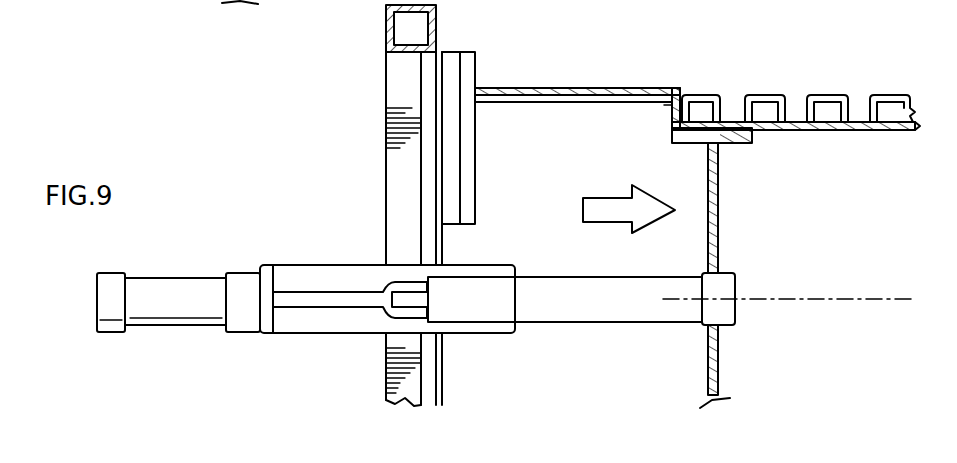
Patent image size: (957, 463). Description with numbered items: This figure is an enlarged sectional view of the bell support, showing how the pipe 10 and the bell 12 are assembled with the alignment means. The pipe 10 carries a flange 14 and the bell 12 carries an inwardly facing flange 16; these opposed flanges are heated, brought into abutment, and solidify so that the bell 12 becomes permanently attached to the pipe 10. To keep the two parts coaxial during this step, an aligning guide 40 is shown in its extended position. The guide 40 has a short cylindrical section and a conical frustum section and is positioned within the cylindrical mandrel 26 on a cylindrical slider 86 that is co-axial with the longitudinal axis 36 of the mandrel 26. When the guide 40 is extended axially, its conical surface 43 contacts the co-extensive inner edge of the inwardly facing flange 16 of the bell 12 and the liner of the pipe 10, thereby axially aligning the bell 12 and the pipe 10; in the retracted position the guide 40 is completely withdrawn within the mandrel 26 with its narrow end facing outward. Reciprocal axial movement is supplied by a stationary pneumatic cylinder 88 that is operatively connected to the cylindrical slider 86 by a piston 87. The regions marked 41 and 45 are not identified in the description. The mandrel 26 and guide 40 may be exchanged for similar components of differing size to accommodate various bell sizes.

The pipe 10 is at (815, 91).
The bell 12 is at (540, 88).
The flange of pipe 14 is at (690, 90).
The inwardly facing flange of bell 16 is at (668, 110).
The cylindrical mandrel 26 is at (545, 102).
The longitudinal axis 36 is at (830, 298).
The aligning guide 40 is at (720, 216).
The plate portion 41 is at (696, 162).
The conical surface 43 is at (748, 143).
The plate portion 45 is at (672, 166).
The cylindrical slider 86 is at (576, 279).
The piston 87 is at (326, 288).
The stationary pneumatic cylinder 88 is at (194, 288).